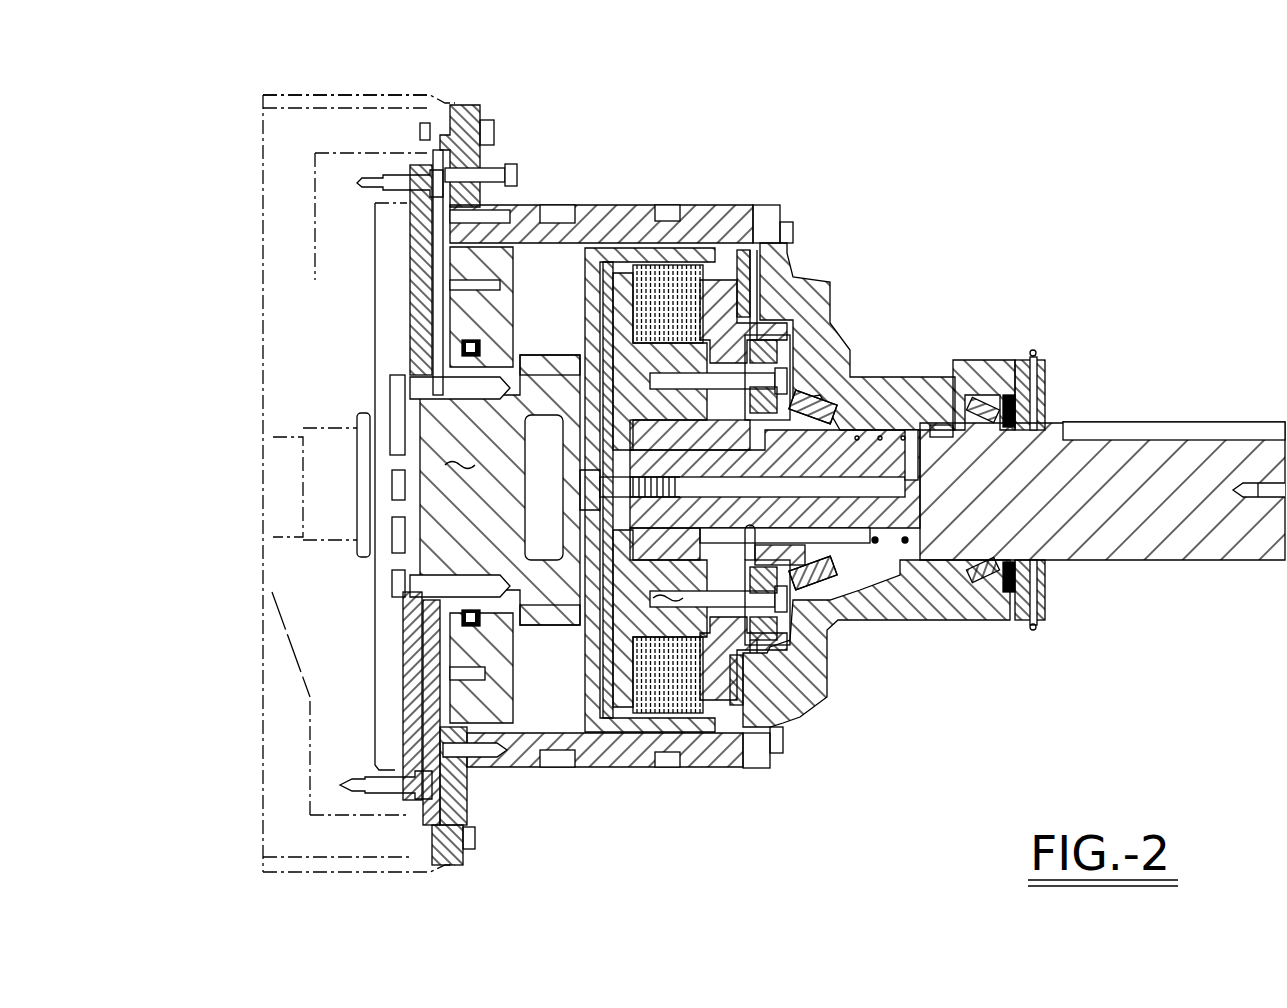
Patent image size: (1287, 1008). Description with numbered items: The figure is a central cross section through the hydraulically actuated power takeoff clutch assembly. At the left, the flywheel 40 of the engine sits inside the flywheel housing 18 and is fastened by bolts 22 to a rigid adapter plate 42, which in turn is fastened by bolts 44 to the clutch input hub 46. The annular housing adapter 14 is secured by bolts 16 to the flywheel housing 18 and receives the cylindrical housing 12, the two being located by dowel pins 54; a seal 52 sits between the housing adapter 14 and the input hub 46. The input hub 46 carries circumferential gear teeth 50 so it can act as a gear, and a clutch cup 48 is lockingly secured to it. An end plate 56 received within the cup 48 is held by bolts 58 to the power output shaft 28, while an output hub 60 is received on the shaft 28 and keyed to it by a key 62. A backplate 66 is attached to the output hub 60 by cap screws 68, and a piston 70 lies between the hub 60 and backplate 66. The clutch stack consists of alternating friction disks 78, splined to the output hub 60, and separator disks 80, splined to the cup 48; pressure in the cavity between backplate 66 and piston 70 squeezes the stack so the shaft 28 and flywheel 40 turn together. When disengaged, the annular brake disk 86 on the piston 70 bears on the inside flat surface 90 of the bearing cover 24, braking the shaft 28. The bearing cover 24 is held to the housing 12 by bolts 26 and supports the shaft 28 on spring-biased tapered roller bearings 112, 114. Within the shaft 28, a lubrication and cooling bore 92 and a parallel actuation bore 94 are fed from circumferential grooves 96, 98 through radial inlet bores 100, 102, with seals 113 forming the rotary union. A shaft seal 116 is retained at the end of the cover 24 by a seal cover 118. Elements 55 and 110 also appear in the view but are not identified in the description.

The cylindrical housing 12 is at (598, 205).
The housing adapter 14 is at (478, 108).
The bolts 16 is at (493, 128).
The flywheel housing 18 is at (322, 95).
The bolts 22 is at (398, 178).
The bearing cover 24 is at (990, 362).
The bolts 26 is at (793, 232).
The power output shaft 28 is at (1220, 562).
The flywheel 40 is at (310, 685).
The adapter plate 42 is at (412, 628).
The bolts 44 is at (398, 383).
The clutch input hub 46 is at (495, 485).
The clutch cup 48 is at (590, 732).
The circumferential gear teeth 50 is at (548, 355).
The seal 52 is at (470, 348).
The dowel pins 54 is at (470, 750).
The retainer 55 is at (1040, 355).
The end plate 56 is at (650, 720).
The bolts 58 is at (590, 485).
The output hub 60 is at (700, 490).
The key 62 is at (612, 437).
The backplate 66 is at (815, 658).
The cap screws 68 is at (790, 360).
The piston 70 is at (722, 290).
The friction disks 78 is at (670, 720).
The separator disks 80 is at (720, 640).
The annular brake disk 86 is at (745, 260).
The inside annular flat surface 90 is at (747, 720).
The lubrication and cooling bore 92 is at (920, 490).
The actuation fluid bore 94 is at (875, 545).
The circumferential groove 96 is at (905, 545).
The circumferential groove 98 is at (878, 432).
The radial inlet bore 100 is at (915, 452).
The radial inlet bore 102 is at (890, 535).
The pin 110 is at (745, 545).
The tapered roller bearing 112 is at (825, 405).
The seals 113 is at (933, 437).
The tapered roller bearing 114 is at (1000, 570).
The shaft seal 116 is at (1010, 590).
The seal cover 118 is at (1040, 610).